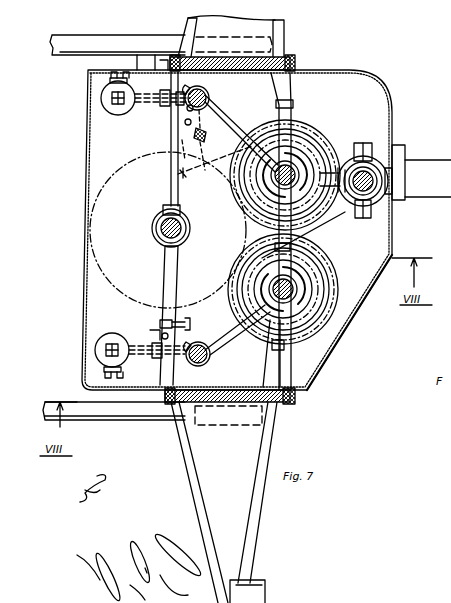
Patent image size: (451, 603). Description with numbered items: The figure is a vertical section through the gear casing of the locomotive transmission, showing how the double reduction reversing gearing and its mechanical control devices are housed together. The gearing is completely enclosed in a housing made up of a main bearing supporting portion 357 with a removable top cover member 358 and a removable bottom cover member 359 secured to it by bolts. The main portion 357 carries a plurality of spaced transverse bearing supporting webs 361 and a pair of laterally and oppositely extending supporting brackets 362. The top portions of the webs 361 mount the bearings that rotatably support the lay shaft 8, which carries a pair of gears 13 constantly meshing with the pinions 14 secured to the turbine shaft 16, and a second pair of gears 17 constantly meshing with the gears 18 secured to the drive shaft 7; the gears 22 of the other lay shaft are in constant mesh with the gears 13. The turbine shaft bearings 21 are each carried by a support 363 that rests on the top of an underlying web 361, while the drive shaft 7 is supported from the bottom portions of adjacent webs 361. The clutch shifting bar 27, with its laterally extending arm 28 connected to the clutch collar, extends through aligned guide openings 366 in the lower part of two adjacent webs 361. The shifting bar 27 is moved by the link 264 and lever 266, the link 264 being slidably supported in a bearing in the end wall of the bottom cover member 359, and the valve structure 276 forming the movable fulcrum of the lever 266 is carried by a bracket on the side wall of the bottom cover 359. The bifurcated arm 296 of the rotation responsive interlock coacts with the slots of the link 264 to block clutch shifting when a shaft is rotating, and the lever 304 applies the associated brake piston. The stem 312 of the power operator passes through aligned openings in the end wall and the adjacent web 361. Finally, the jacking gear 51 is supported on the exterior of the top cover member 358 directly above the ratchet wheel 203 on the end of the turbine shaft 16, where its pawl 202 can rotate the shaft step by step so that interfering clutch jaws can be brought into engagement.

The drive shaft 7 is at (190, 229).
The lay shaft 8 is at (285, 231).
The gears 13 is at (300, 160).
The pinions 14 is at (396, 187).
The turbine shaft 16 is at (371, 168).
The gears 17 is at (312, 218).
The gears 18 is at (128, 167).
The bearings 21 is at (371, 142).
The gears 22 is at (312, 252).
The clutch shifting bar 27 is at (206, 94).
The laterally extending arm 28 is at (235, 118).
The jacking gear 51 is at (429, 152).
The pawl 202 is at (385, 195).
The ratchet wheel 203 is at (360, 218).
The link 264 is at (176, 93).
The lever 266 is at (165, 106).
The valve structure 276 is at (112, 117).
The arm 296 is at (177, 110).
The lever 304 is at (215, 162).
The stem 312 is at (194, 136).
The main bearing supporting portion 357 is at (196, 412).
The top cover member 358 is at (352, 318).
The bottom cover member 359 is at (80, 333).
The bearing supporting web 361 is at (272, 373).
The supporting bracket 362 is at (288, 49).
The support 363 is at (298, 122).
The guide openings 366 is at (210, 99).